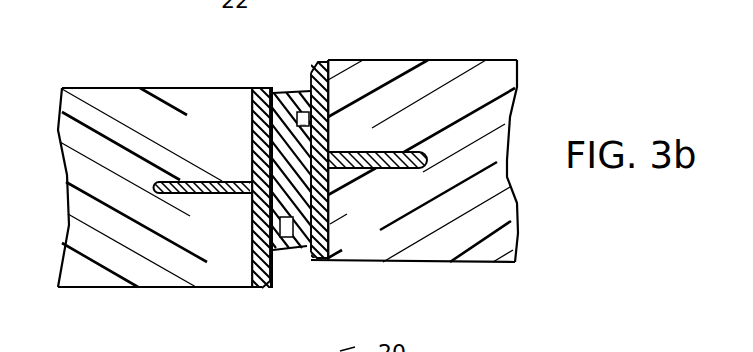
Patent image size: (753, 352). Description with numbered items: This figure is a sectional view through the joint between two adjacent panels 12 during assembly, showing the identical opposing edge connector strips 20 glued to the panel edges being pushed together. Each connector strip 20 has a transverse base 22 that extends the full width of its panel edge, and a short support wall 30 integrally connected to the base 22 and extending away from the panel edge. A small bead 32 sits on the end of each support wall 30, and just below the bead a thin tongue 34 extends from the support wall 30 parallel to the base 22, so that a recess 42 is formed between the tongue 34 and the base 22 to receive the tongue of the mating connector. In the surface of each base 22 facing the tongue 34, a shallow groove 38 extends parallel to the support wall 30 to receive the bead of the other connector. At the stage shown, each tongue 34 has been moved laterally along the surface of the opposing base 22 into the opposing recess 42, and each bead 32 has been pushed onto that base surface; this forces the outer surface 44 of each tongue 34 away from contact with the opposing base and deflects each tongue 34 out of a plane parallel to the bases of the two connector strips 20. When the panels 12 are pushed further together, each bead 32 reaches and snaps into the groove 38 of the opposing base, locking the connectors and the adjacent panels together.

The panel 12 is at (92, 87).
The edge connector 20 is at (313, 27).
The transverse base 22 is at (315, 64).
The support wall 30 is at (280, 92).
The bead 32 is at (252, 100).
The tongue 34 is at (327, 146).
The groove 38 is at (268, 134).
The recess 42 is at (300, 111).
The outer surface of tongue 44 is at (244, 196).